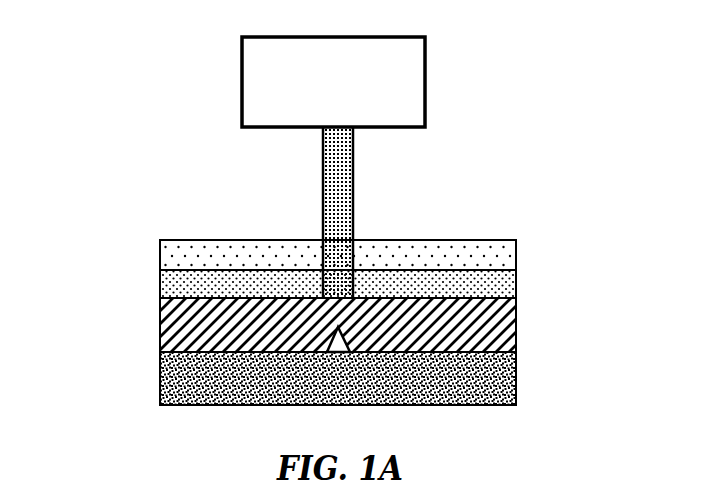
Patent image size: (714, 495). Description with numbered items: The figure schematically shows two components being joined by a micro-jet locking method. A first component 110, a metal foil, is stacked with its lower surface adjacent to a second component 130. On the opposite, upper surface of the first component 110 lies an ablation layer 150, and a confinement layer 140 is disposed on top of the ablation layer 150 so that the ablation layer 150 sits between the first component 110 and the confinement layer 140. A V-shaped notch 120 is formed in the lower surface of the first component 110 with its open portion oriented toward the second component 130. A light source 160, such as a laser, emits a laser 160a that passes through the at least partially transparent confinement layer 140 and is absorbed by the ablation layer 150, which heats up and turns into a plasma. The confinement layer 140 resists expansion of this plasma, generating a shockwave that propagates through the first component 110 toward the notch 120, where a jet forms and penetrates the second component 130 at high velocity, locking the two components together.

The first component 110 is at (505, 319).
The notch 120 is at (330, 339).
The second component 130 is at (505, 376).
The confinement layer 140 is at (505, 257).
The ablation layer 150 is at (505, 283).
The light source 160 is at (314, 96).
The laser 160a is at (354, 193).